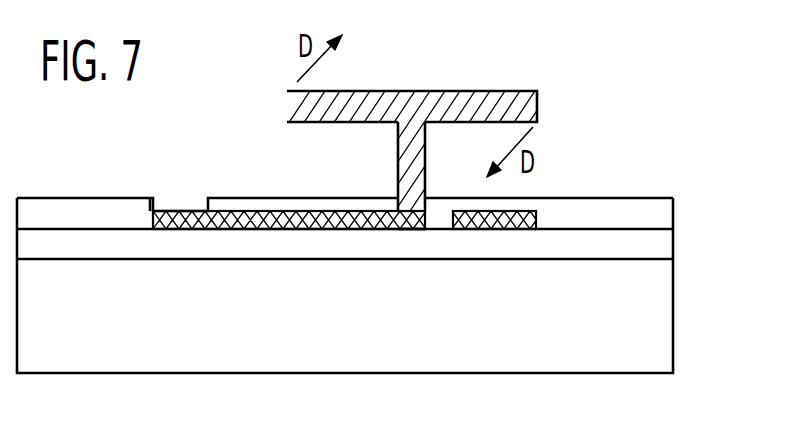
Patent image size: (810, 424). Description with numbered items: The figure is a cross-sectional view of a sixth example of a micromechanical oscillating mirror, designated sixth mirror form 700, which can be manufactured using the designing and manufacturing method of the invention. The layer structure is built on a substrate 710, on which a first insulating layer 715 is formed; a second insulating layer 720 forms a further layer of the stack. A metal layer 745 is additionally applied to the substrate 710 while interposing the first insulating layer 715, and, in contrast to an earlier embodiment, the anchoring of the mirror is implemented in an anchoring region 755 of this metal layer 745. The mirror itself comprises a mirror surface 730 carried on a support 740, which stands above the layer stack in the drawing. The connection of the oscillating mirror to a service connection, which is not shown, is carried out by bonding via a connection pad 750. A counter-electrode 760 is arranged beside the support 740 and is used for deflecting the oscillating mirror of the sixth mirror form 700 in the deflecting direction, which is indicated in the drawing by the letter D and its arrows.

The sixth mirror form 700 is at (427, 108).
The substrate 710 is at (665, 318).
The first insulating layer 715 is at (665, 250).
The second insulating layer 720 is at (665, 212).
The mirror surface 730 is at (440, 91).
The support 740 is at (398, 162).
The metal layer 745 is at (152, 218).
The connection pad 750 is at (179, 210).
The anchoring region 755 is at (412, 230).
The counter-electrode 760 is at (518, 212).